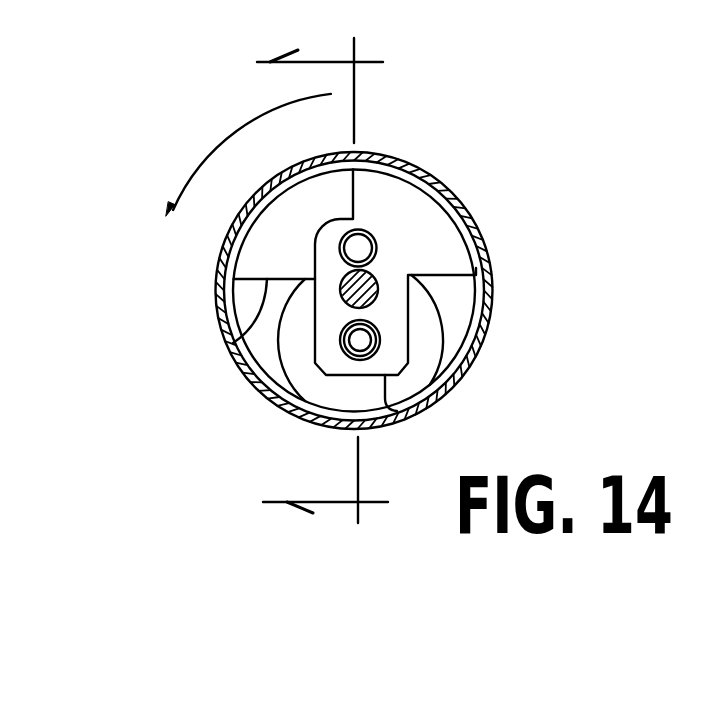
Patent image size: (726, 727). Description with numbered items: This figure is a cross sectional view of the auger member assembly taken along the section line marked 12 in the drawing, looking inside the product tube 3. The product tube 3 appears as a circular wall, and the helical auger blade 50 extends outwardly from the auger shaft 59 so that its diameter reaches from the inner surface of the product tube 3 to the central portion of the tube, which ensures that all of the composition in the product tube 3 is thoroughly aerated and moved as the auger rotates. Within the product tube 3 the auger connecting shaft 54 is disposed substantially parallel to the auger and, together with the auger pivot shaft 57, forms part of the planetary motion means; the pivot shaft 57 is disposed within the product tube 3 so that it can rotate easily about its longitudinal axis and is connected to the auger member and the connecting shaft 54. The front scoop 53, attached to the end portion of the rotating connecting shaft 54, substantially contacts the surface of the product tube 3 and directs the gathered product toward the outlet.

The product tube 3 is at (420, 165).
The section line 12- 12 is at (280, 284).
The auger blade 50 is at (280, 358).
The front scoop 53 is at (233, 343).
The auger connecting shaft 54 is at (373, 237).
The auger pivot shaft 57 is at (377, 293).
The auger shaft 59 is at (380, 346).